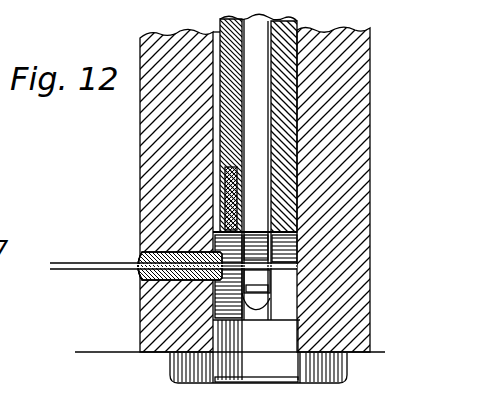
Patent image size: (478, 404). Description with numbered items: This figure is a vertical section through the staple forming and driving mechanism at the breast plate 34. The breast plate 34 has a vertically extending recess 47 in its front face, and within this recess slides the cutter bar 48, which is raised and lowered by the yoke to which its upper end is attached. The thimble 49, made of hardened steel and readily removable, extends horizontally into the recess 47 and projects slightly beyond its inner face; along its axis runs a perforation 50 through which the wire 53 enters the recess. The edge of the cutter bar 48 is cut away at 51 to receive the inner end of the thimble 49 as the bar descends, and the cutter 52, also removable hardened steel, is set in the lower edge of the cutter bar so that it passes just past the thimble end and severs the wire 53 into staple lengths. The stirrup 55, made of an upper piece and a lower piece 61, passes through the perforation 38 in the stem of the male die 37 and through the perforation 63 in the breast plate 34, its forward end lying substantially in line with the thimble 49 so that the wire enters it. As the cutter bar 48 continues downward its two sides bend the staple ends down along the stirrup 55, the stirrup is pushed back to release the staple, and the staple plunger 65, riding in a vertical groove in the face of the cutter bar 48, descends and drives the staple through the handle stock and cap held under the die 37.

The breast plate 34 is at (357, 195).
The upper or male die 37 is at (175, 383).
The vertically extending slot or perforation 38 is at (272, 309).
The vertically extending recess 47 is at (273, 293).
The sliding cutter bar 48 is at (283, 127).
The thimble 49 is at (147, 257).
The perforation 50 is at (145, 272).
The recess or cut-away 51 is at (215, 147).
The cutter 52 is at (226, 192).
The wire 53 is at (63, 270).
The stirrup 55 is at (255, 240).
The lower piece 61 is at (272, 297).
The perforation 63 is at (215, 322).
The staple plunger 65 is at (262, 28).